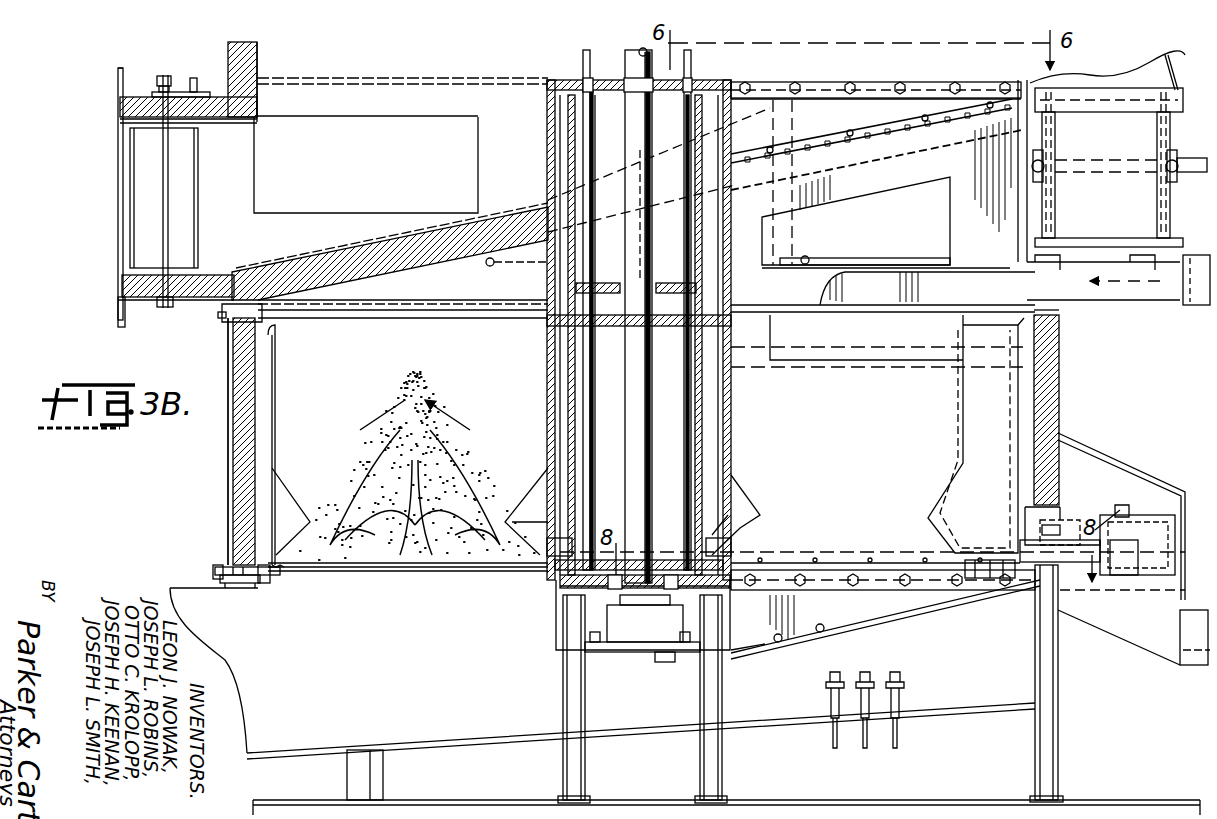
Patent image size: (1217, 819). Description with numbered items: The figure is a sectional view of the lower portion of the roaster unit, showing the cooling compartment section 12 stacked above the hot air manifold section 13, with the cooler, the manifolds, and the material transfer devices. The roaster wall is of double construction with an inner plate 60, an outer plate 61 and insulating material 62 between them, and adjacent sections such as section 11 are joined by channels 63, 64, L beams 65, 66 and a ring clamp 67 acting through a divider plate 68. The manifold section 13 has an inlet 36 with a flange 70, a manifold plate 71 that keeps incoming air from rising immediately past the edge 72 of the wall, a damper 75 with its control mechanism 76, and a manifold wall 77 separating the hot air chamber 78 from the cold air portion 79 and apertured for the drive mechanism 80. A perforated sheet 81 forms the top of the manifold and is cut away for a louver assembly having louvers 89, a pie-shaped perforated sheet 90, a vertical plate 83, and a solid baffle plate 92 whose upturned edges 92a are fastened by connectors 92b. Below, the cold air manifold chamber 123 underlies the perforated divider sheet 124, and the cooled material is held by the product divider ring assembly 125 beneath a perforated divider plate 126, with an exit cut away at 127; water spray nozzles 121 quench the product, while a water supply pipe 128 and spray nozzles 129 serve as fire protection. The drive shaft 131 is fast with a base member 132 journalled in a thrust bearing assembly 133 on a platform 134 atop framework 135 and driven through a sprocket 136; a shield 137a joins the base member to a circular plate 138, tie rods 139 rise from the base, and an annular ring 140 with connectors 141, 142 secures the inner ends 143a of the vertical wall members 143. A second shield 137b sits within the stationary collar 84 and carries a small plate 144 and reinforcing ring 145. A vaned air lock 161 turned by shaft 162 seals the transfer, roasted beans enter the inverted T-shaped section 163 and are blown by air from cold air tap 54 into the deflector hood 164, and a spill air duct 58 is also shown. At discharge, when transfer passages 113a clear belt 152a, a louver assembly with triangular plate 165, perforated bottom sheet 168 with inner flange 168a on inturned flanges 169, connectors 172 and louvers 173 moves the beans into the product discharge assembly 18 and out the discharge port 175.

The roaster section 11 is at (1065, 668).
The cooling compartment section 12 is at (162, 468).
The hot air manifold section 13 is at (112, 155).
The product discharge assembly 18 is at (1185, 492).
The inlet 36 is at (128, 308).
The cold air tap 54 is at (1200, 305).
The spill air duct 58 is at (1160, 60).
The inner plate 60 is at (272, 400).
The outer plate 61 is at (232, 428).
The insulating material 62 is at (233, 466).
The channel 63 is at (232, 540).
The channel 64 is at (248, 592).
The L beam 65 is at (230, 563).
The L beam 66 is at (225, 590).
The ring clamp 67 is at (215, 572).
The divider plate 68 is at (265, 590).
The flange 70 is at (118, 72).
The manifold plate 71 is at (432, 132).
The edge of roaster wall 72 is at (258, 90).
The damper 75 is at (130, 213).
The control mechanism 76 is at (188, 82).
The manifold wall 77 is at (383, 268).
The hot air chamber 78 is at (478, 84).
The cold air portion 79 is at (438, 322).
The drive mechanism 80 is at (548, 104).
The perforated sheet 81 is at (400, 80).
The vertical plate 83 is at (880, 185).
The stationary collar 84 is at (760, 215).
The louvers 89 is at (775, 80).
The perforated sheet 90 is at (865, 82).
The baffle plate 92 is at (902, 118).
The upturned edges 92a is at (800, 140).
The connectors 92b is at (925, 115).
The transfer passages 113a is at (985, 590).
The water spray nozzles 121 is at (900, 678).
The cold air manifold chamber 123 is at (448, 735).
The perforated divider sheet 124 is at (438, 582).
The product divider ring assembly 125 is at (1040, 420).
The perforated divider plate 126 is at (305, 310).
The cut-away wall exit 127 is at (1062, 515).
The water supply pipe 128 is at (855, 258).
The spray nozzles 129 is at (486, 264).
The drive shaft 131 is at (640, 36).
The base member 132 is at (556, 632).
The vertical thrust bearing assembly 133 is at (665, 640).
The platform 134 is at (602, 655).
The framework 135 is at (585, 772).
The toothed sprocket 136 is at (590, 588).
The shield 137a is at (706, 470).
The second shield 137b is at (568, 186).
The centrally apertured circular plate 138 is at (712, 320).
The tie rods 139 is at (585, 394).
The annular ring 140 is at (740, 520).
The connector 141 is at (735, 555).
The connector 142 is at (548, 324).
The vertical wall members 143 is at (290, 356).
The inner ends 143a is at (540, 445).
The small centrally apertured plate 144 is at (705, 80).
The annular ring 145 is at (620, 290).
The belt 152a is at (282, 495).
The vaned air lock 161 is at (1180, 130).
The shaft 162 is at (1205, 180).
The inverted T-shaped section 163 is at (1100, 300).
The deflector hood 164 is at (905, 300).
The triangularly shaped plate 165 is at (915, 615).
The perforated inclined bottom sheet 168 is at (780, 640).
The inner flange 168a is at (738, 645).
The inturned flanges 169 is at (738, 655).
The connectors 172 is at (853, 592).
The louvers 173 is at (800, 555).
The discharge port 175 is at (1207, 660).